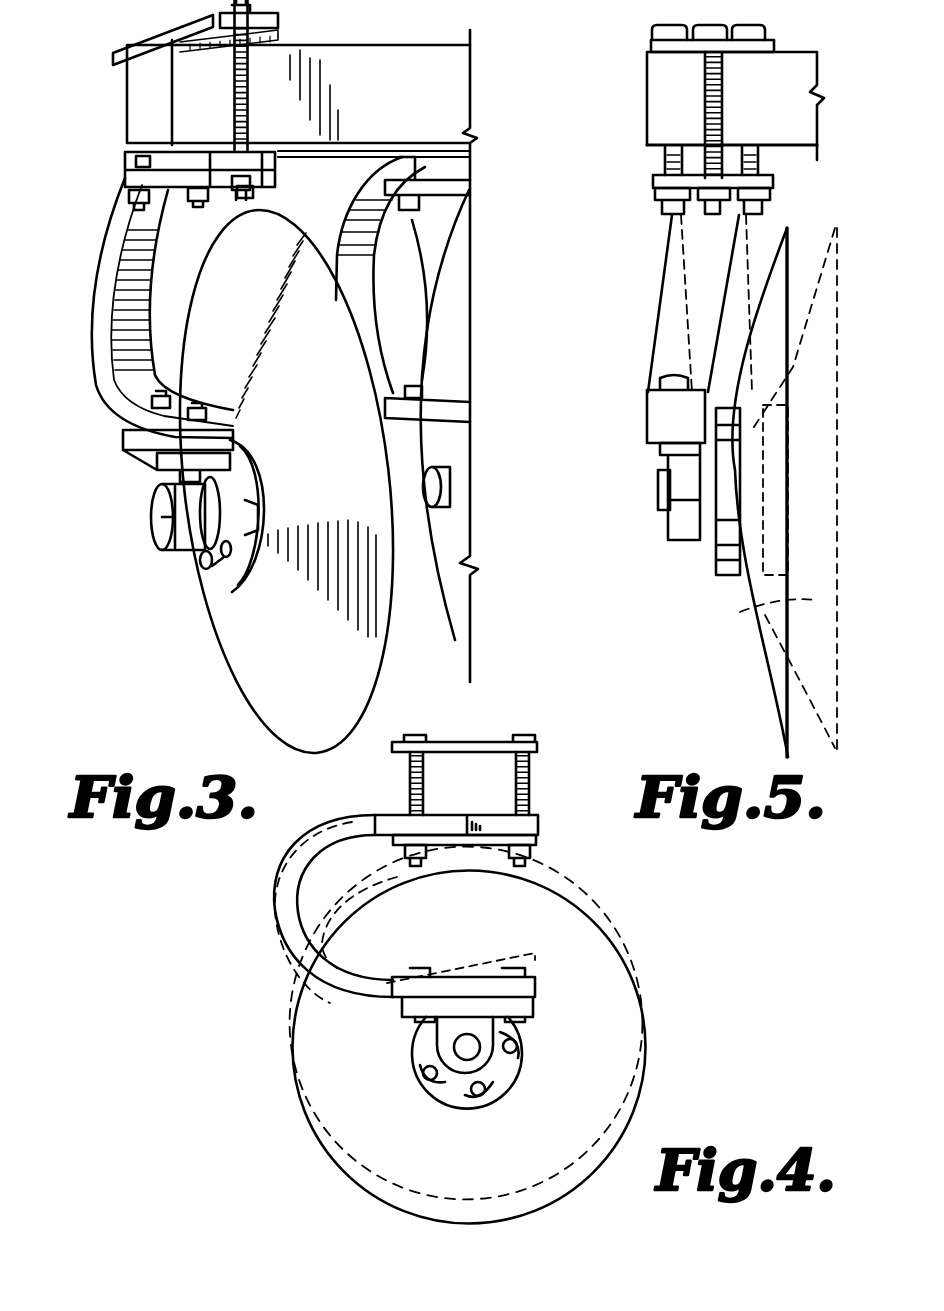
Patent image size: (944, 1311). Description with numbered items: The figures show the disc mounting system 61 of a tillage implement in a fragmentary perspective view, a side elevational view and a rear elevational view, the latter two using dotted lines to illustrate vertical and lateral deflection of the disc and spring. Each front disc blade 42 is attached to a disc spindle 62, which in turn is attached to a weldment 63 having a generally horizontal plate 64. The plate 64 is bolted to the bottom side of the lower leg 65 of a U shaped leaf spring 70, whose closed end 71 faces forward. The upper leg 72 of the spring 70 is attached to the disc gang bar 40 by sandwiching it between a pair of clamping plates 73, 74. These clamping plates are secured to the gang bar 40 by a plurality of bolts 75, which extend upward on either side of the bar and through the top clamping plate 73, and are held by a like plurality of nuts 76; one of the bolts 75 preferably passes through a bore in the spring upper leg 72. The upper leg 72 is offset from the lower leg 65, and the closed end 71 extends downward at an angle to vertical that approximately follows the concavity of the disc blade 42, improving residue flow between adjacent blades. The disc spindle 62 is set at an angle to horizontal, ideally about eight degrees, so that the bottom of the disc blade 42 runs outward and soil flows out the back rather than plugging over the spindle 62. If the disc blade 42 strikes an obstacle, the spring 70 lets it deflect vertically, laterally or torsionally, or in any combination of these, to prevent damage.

In FIG. 3, the disc gang bar 40 is at (323, 62).
In FIG. 3, the disc blade 42 is at (238, 656).
In FIG. 5, the disc blade 42 is at (742, 613).
In FIG. 4, the disc blade 42 is at (603, 912).
In FIG. 3, the disc mounting system 61 is at (80, 212).
In FIG. 3, the disc spindle 62 is at (152, 517).
In FIG. 3, the weldment 63 is at (200, 556).
In FIG. 3, the plate 64 is at (122, 458).
In FIG. 3, the lower leg 65 is at (112, 400).
In FIG. 5, the lower leg 65 is at (647, 415).
In FIG. 4, the lower leg 65 is at (480, 988).
In FIG. 3, the U shaped leaf spring 70 is at (129, 308).
In FIG. 5, the U shaped leaf spring 70 is at (666, 303).
In FIG. 4, the U shaped leaf spring 70 is at (341, 887).
In FIG. 3, the closed end 71 is at (94, 272).
In FIG. 5, the closed end 71 is at (656, 312).
In FIG. 4, the closed end 71 is at (282, 940).
In FIG. 3, the upper leg 72 is at (285, 160).
In FIG. 5, the upper leg 72 is at (666, 162).
In FIG. 4, the upper leg 72 is at (446, 830).
In FIG. 3, the top clamping plate 73 is at (165, 14).
In FIG. 3, the clamping plate 74 is at (124, 185).
In FIG. 4, the bolts 75 is at (538, 778).
In FIG. 3, the nuts 76 is at (224, 200).
In FIG. 4, the nuts 76 is at (536, 849).